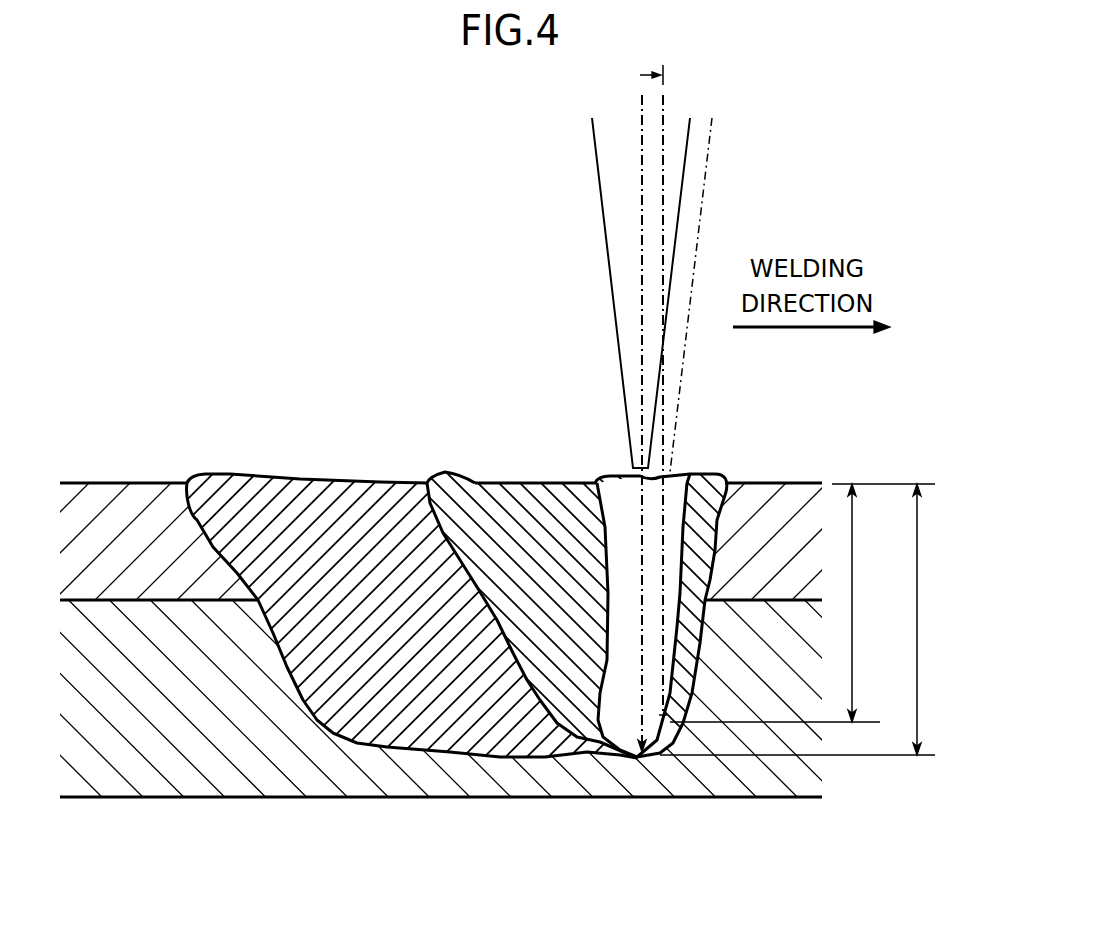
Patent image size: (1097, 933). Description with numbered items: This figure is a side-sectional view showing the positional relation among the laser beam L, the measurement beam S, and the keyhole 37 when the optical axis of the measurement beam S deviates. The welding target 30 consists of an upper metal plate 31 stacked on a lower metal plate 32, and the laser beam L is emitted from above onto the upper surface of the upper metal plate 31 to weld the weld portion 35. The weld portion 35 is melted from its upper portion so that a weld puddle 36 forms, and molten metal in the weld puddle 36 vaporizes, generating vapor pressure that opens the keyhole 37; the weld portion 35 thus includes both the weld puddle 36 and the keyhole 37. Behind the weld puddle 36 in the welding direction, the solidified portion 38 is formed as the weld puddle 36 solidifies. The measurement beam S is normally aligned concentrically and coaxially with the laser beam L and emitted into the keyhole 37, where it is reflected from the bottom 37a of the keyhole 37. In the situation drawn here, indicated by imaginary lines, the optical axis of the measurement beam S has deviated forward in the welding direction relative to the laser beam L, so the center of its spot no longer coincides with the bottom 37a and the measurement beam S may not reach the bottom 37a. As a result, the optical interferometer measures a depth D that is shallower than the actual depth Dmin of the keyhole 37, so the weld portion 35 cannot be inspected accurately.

The welding target 30 is at (501, 651).
The upper metal plate 31 is at (118, 481).
The lower metal plate 32 is at (146, 800).
The weld portion 35 is at (583, 477).
The weld puddle 36 is at (531, 481).
The keyhole 37 is at (687, 478).
The bottom of the keyhole 37a is at (627, 755).
The solidified portion 38 is at (323, 481).
The laser beam L is at (604, 225).
The measurement beam S is at (697, 224).
The depth D is at (802, 603).
The actual depth Dmin is at (817, 619).